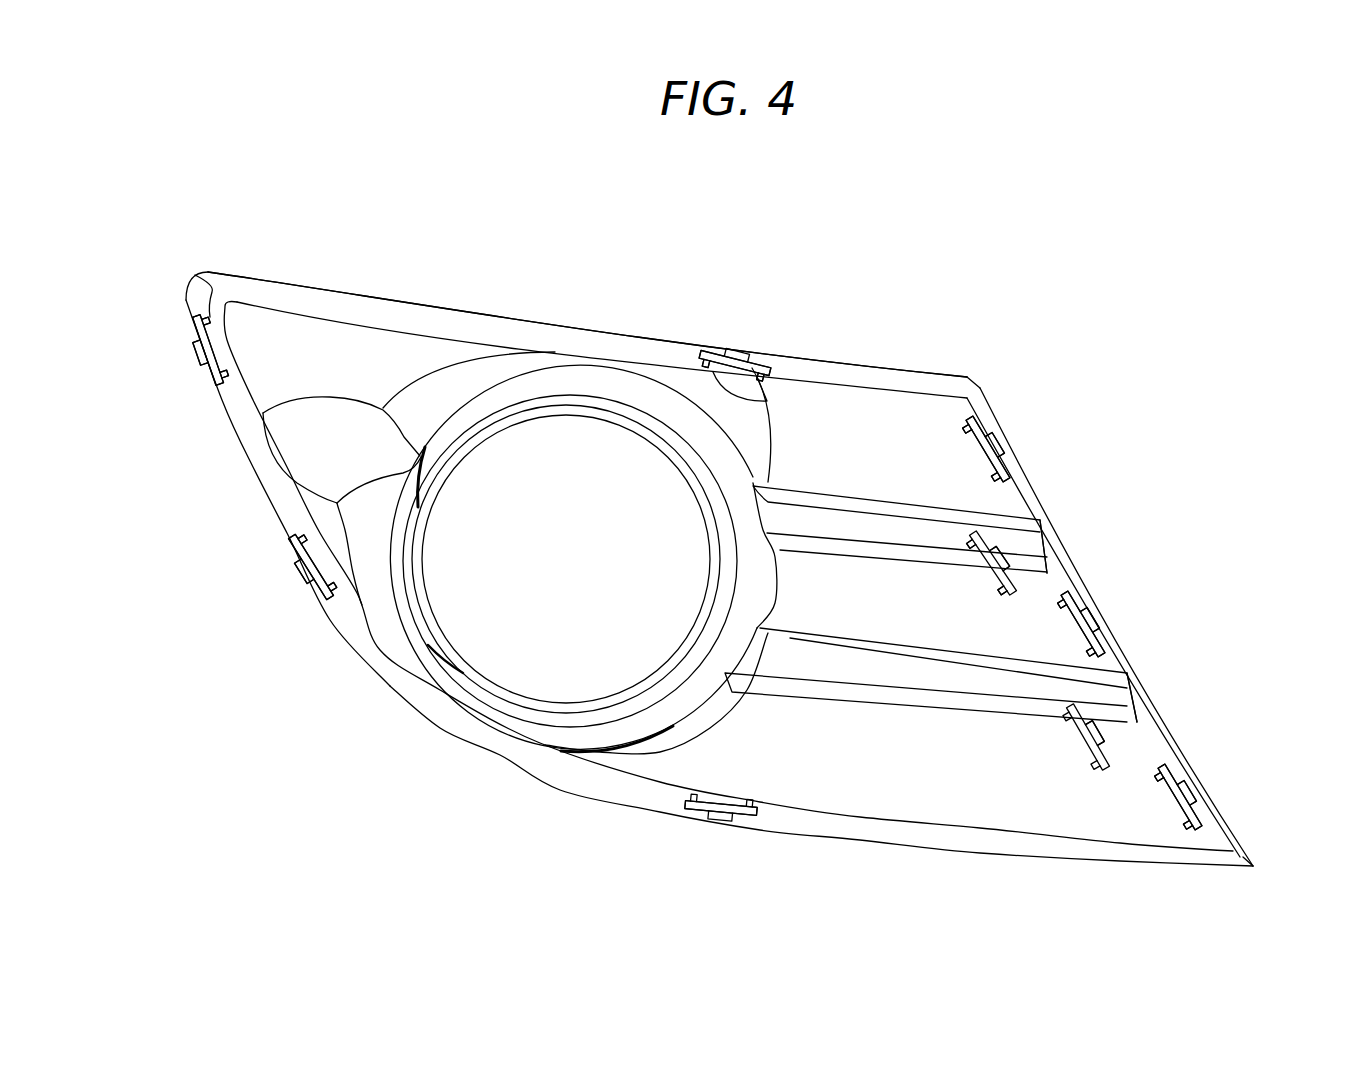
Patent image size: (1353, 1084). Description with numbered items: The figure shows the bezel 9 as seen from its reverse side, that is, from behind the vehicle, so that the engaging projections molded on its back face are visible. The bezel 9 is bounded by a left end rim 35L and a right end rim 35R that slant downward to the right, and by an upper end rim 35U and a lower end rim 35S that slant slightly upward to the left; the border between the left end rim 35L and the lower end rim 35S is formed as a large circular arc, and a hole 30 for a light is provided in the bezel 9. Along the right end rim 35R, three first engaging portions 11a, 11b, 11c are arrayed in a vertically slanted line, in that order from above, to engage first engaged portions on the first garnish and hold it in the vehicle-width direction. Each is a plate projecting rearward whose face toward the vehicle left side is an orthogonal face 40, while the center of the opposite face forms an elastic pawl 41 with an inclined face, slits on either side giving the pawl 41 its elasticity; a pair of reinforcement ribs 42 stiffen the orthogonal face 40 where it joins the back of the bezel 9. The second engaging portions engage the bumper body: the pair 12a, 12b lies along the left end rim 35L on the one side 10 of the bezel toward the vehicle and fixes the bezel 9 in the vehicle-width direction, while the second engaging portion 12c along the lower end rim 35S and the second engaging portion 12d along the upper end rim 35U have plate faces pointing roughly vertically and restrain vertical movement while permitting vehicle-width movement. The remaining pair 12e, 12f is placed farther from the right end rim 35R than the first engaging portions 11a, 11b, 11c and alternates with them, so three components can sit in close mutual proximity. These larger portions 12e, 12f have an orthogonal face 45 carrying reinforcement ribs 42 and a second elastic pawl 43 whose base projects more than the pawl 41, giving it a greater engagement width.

The bezel 9 is at (595, 310).
The one side of the bezel 10 is at (277, 507).
The hole for a light 30 is at (510, 660).
The upper end rim 35U is at (455, 310).
The left end rim 35L is at (248, 465).
The right end rim 35R is at (1048, 503).
The lower end rim 35S is at (875, 845).
The first engaging portion 11a is at (993, 440).
The first engaging portion 11b is at (1101, 600).
The first engaging portion 11c is at (1198, 793).
The second engaging portion 12a is at (202, 355).
The second engaging portion 12b is at (303, 583).
The second engaging portion 12c is at (717, 817).
The second engaging portion 12d is at (740, 360).
The second engaging portion 12e is at (980, 562).
The second engaging portion 12f is at (1077, 740).
The orthogonal face 40 is at (215, 353).
The elastic pawl 41 is at (199, 345).
The reinforcement ribs 42 is at (200, 283).
The second elastic pawl 43 is at (1047, 549).
The orthogonal face 45 is at (993, 581).